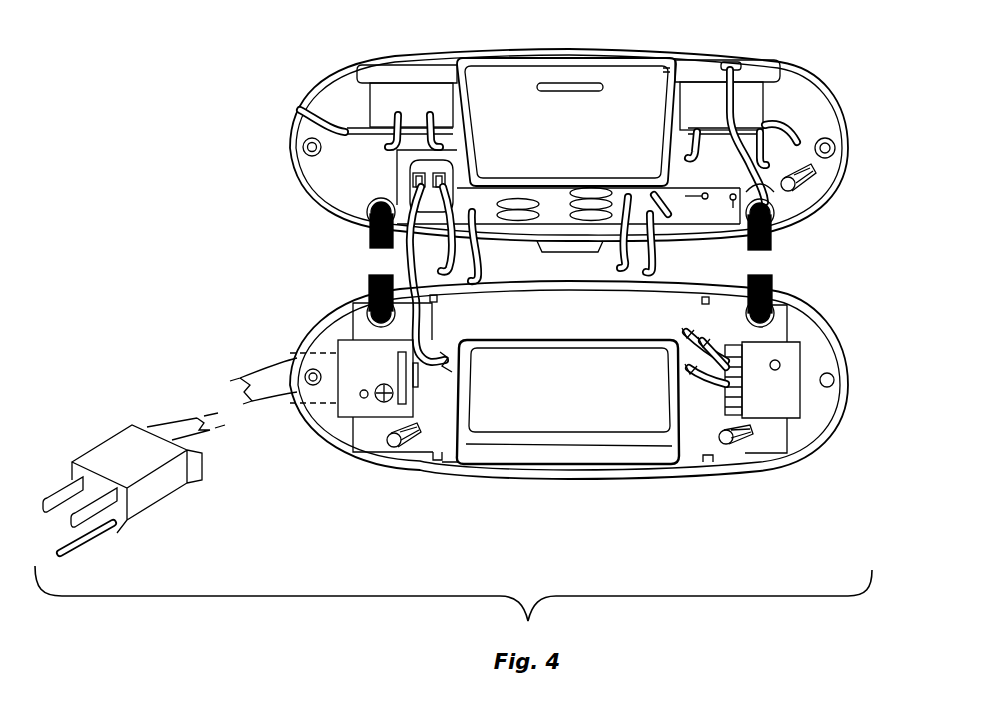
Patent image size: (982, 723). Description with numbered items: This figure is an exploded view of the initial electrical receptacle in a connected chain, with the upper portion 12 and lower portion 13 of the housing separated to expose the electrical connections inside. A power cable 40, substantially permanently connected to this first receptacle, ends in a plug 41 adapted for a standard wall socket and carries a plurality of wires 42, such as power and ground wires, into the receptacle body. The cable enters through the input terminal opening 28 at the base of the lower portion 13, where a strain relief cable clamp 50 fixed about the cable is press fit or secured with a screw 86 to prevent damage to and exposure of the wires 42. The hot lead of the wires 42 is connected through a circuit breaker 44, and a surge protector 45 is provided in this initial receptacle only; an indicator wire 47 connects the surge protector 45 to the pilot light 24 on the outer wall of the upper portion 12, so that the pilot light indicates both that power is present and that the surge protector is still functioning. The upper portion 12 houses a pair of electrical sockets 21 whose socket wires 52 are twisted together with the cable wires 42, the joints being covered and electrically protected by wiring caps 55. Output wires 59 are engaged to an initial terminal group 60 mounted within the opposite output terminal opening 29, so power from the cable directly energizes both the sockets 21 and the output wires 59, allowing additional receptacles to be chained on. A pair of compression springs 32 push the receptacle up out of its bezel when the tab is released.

The upper portion 12 is at (800, 73).
The lower portion 13 is at (810, 302).
The electrical sockets 21 is at (389, 76).
The pilot light 24 is at (728, 62).
The input terminal opening 28 is at (396, 350).
The output terminal opening 29 is at (742, 404).
The compression springs 32 is at (370, 232).
The power cable 40 is at (252, 373).
The plug 41 is at (123, 453).
The wires 42 is at (400, 348).
The circuit breaker 44 is at (397, 182).
The surge protector 45 is at (547, 205).
The indicator wire 47 is at (760, 178).
The strain relief cable clamp 50 is at (350, 395).
The socket wires 52 is at (300, 107).
The wiring caps 55 is at (805, 195).
The output wires 59 is at (717, 387).
The initial terminal group 60 is at (790, 365).
The screw 86 is at (383, 403).